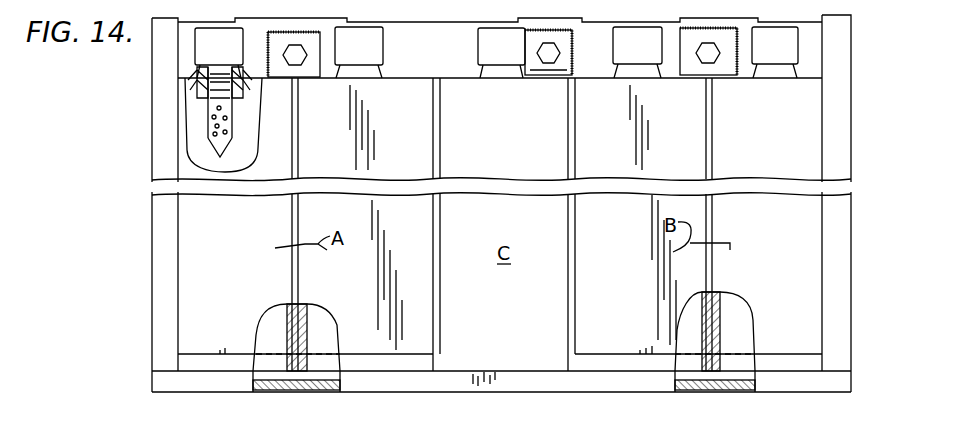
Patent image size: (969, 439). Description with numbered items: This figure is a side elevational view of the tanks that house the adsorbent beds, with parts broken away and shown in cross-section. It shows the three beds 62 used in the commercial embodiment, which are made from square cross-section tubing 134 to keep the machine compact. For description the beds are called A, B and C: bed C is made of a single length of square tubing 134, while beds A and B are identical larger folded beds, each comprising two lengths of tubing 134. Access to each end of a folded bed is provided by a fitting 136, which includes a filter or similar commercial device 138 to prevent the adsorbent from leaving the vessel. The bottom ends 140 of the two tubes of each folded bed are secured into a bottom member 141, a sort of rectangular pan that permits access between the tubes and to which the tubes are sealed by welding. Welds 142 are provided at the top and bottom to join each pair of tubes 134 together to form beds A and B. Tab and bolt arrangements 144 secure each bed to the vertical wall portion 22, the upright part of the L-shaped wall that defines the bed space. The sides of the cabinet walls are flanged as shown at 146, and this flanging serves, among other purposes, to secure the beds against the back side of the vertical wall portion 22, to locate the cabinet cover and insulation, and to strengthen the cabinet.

The vertical wall portion 22 is at (585, 55).
The beds 62 is at (824, 270).
The square cross-sectional tubing 134 is at (246, 254).
The fitting 136 is at (235, 56).
The filter 138 is at (215, 125).
The bottom ends of tubing 140 is at (265, 350).
The bottom member 141 is at (198, 365).
The welds 142 is at (297, 100).
The tab and bolt arrangements 144 is at (547, 78).
The flanges 146 is at (373, 380).